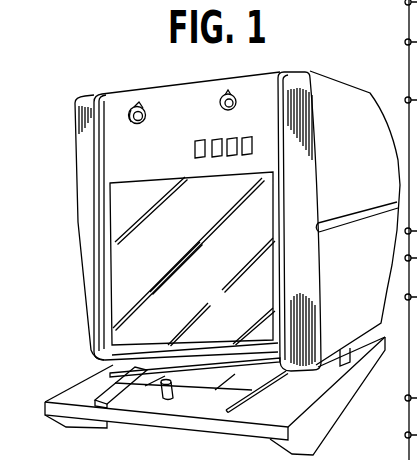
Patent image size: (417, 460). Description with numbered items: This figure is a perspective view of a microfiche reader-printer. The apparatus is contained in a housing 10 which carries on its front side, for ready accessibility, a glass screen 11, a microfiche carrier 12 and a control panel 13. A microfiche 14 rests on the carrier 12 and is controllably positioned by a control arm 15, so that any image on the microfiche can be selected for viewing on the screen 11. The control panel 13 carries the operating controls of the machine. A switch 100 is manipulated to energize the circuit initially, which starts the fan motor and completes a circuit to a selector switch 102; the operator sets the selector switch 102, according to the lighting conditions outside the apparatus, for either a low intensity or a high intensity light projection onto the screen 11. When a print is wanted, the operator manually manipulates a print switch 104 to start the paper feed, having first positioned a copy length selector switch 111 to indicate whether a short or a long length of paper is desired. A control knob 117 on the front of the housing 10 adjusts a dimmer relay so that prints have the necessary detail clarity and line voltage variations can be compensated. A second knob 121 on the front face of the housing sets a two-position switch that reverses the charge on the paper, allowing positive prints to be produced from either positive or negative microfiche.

The housing 10 is at (340, 110).
The glass screen 11 is at (208, 284).
The microfiche carrier 12 is at (95, 386).
The control panel 13 is at (177, 94).
The microfiche 14 is at (192, 372).
The control arm 15 is at (160, 393).
The switch 100 is at (247, 157).
The selector switch 102 is at (216, 159).
The print switch 104 is at (232, 158).
The copy length selector switch 111 is at (197, 154).
The control knob 117 is at (229, 110).
The knob 121 is at (144, 121).